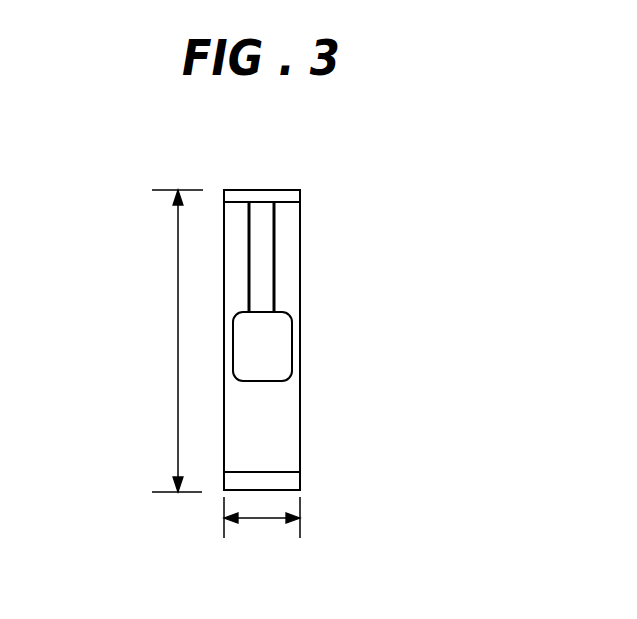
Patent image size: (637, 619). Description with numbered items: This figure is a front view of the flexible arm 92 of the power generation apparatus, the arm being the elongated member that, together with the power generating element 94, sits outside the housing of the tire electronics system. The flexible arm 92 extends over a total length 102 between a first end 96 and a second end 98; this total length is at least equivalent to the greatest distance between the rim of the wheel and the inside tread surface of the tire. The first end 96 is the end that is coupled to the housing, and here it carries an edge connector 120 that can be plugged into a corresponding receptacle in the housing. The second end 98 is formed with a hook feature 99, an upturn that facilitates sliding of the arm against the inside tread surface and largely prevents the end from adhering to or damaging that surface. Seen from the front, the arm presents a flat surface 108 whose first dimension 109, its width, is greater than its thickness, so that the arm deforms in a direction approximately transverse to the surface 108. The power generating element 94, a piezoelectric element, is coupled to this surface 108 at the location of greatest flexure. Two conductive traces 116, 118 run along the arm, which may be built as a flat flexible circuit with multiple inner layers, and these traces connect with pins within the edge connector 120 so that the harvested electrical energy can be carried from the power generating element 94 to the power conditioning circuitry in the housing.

The flexible arm 92 is at (300, 302).
The power generating element 94 is at (268, 348).
The first end 96 is at (300, 212).
The second end 98 is at (300, 458).
The hook feature 99 is at (300, 480).
The total length 102 is at (178, 265).
The surface 108 is at (284, 449).
The first dimension 109 is at (253, 519).
The conductive trace 116 is at (250, 270).
The conductive trace 118 is at (275, 298).
The edge connector 120 is at (235, 192).